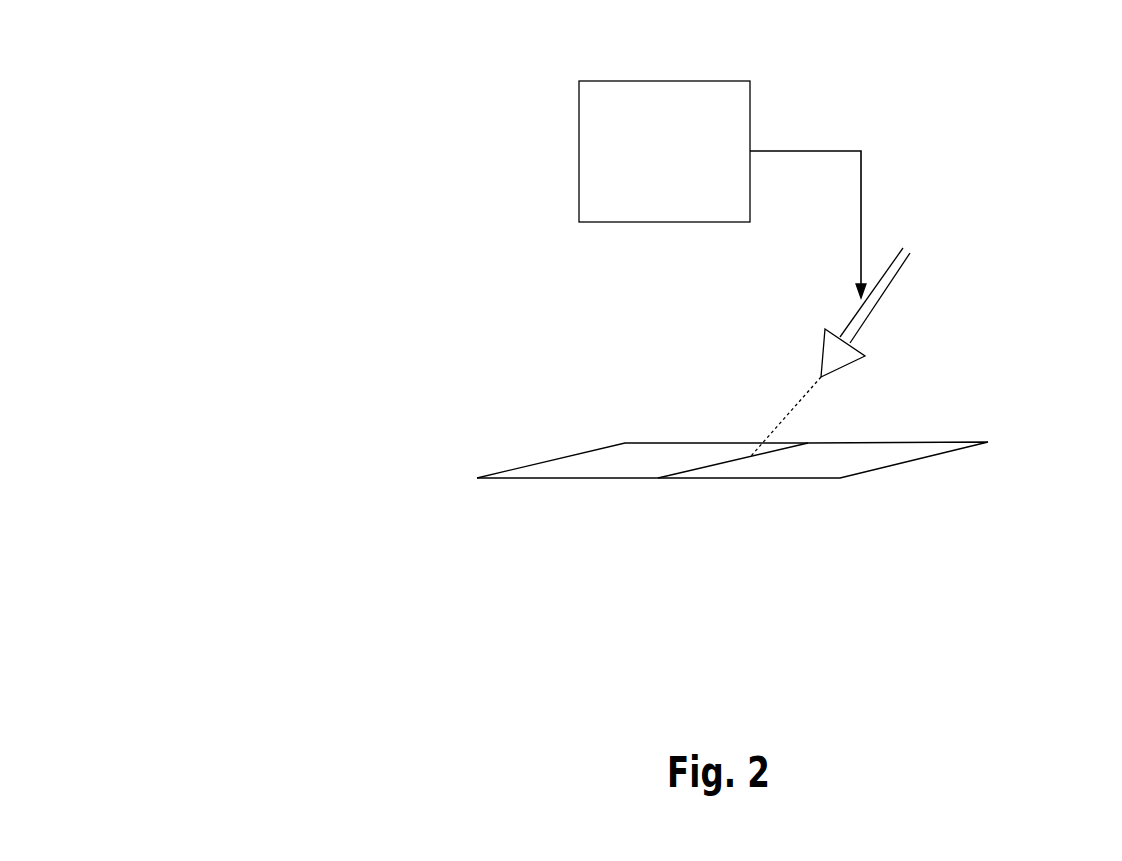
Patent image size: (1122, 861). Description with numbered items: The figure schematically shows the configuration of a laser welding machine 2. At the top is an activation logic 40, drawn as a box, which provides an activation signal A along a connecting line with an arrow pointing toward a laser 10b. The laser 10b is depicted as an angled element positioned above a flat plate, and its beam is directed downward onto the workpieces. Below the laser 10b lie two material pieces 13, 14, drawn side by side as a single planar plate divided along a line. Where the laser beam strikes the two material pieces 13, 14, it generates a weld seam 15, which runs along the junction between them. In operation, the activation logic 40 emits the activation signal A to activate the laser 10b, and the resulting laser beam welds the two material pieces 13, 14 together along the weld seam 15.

The laser welding machine 2 is at (283, 82).
The activation logic 40 is at (565, 88).
The activation signal A is at (880, 158).
The laser 10b is at (900, 290).
The material piece 13 is at (543, 450).
The material piece 14 is at (990, 443).
The weld seam 15 is at (697, 475).